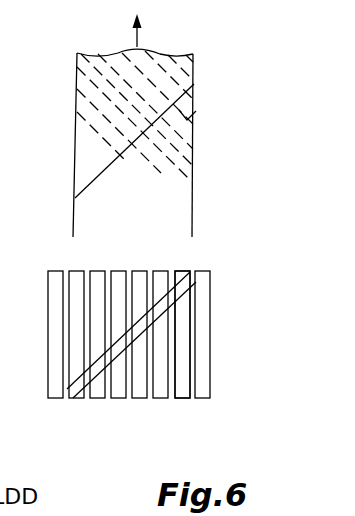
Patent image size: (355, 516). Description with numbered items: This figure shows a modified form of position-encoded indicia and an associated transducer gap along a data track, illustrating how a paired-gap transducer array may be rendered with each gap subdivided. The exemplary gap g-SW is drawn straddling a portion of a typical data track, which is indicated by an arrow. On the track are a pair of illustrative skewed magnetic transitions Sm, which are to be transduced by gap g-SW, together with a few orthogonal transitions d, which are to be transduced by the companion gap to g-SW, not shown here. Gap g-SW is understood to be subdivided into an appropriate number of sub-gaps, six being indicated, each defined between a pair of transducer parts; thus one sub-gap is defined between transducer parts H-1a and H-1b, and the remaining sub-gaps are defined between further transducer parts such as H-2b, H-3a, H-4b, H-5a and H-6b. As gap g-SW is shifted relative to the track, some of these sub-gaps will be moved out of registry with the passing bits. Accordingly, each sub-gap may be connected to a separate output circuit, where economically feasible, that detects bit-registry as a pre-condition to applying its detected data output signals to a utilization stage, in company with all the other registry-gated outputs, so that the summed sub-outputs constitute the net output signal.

The orthogonal transitions d is at (197, 111).
The skewed magnetic transitions Sm is at (88, 180).
The transducer part H-6b is at (78, 271).
The transducer part H-5a is at (93, 398).
The transducer part H-4b is at (117, 271).
The transducer part H-3a is at (137, 398).
The transducer part H-2b is at (163, 271).
The transducer part H-1a is at (180, 398).
The transducer part H-1b is at (182, 271).
The transducer gap g-SW is at (206, 265).